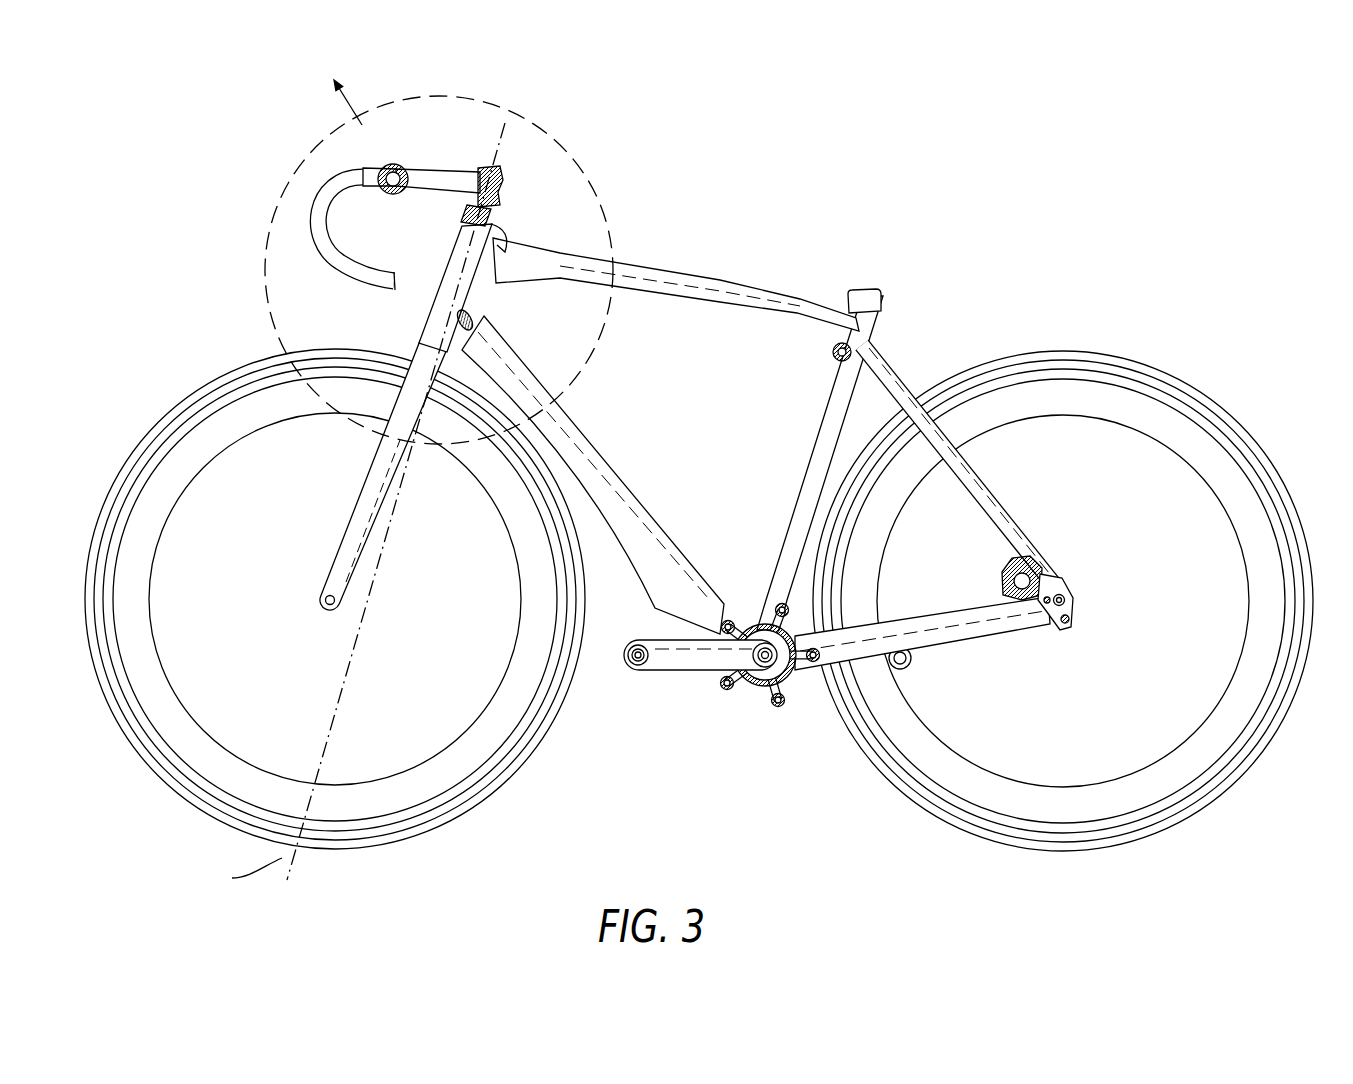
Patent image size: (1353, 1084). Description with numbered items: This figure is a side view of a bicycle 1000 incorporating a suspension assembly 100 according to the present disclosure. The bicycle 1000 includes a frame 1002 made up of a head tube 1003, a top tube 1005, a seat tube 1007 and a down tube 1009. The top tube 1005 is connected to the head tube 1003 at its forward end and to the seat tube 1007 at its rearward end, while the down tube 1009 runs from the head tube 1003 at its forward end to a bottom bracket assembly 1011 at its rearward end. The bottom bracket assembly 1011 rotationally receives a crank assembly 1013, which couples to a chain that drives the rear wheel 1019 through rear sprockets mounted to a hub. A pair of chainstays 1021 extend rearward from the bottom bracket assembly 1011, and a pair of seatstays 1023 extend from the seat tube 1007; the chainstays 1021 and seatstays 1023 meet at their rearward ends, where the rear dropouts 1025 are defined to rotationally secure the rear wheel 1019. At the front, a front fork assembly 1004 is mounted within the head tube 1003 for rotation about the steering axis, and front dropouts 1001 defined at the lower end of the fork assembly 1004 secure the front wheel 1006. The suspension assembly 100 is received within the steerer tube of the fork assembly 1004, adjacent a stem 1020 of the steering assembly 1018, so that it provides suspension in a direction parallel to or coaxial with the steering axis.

The suspension assembly 100 is at (434, 176).
The bicycle 1000 is at (1060, 208).
The front dropouts 1001 is at (323, 599).
The frame 1002 is at (806, 282).
The head tube 1003 is at (434, 293).
The front fork assembly 1004 is at (356, 480).
The top tube 1005 is at (653, 266).
The front wheel 1006 is at (418, 835).
The seat tube 1007 is at (802, 483).
The down tube 1009 is at (628, 557).
The bottom bracket assembly 1011 is at (743, 597).
The crank assembly 1013 is at (744, 712).
The steering assembly 1018 is at (328, 188).
The rear wheel 1019 is at (1158, 832).
The stem 1020 is at (440, 167).
The chainstays 1021 is at (953, 632).
The seatstays 1023 is at (900, 388).
The rear dropouts 1025 is at (1072, 603).